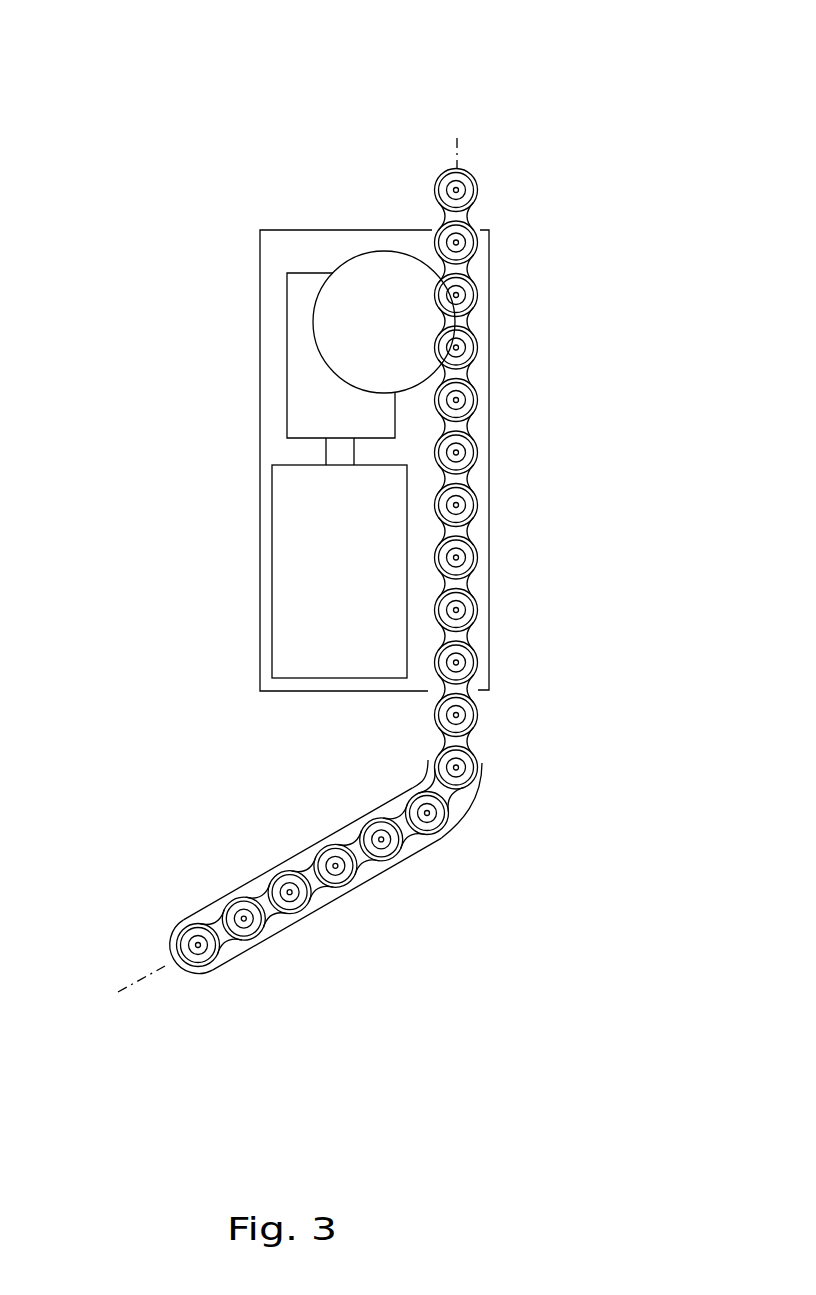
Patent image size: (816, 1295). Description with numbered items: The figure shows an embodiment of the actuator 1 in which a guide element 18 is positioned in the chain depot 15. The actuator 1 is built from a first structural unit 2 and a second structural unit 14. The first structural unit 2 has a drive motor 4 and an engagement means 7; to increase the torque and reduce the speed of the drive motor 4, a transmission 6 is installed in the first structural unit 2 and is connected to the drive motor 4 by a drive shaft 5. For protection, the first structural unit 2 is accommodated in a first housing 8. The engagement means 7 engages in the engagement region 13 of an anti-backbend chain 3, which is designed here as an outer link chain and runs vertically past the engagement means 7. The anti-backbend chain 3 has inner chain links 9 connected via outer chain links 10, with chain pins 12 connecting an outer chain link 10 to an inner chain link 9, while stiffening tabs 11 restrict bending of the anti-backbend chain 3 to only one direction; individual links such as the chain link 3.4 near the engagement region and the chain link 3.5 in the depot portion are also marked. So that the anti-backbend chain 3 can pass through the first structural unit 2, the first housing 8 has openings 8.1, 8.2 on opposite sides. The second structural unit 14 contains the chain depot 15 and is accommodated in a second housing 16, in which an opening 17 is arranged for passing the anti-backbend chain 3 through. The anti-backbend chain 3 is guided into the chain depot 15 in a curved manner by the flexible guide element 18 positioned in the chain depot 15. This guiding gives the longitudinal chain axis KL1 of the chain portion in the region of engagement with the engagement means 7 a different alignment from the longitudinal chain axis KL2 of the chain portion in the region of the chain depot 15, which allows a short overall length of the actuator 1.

The actuator 1 is at (320, 525).
The first structural unit 2 is at (243, 283).
The anti-backbend chain 3 is at (389, 553).
The chain link 3.4 is at (477, 300).
The chain link 3.5 is at (307, 912).
The drive motor 4 is at (339, 571).
The drive shaft 5 is at (342, 452).
The transmission 6 is at (341, 355).
The engagement means 7 is at (384, 322).
The first housing 8 is at (305, 460).
The opening 8.1 is at (481, 229).
The opening 8.2 is at (473, 692).
The inner chain link 9 is at (468, 375).
The outer chain link 10 is at (468, 428).
The stiffening tab 11 is at (477, 458).
The chain pin 12 is at (480, 513).
The engagement region 13 is at (468, 323).
The second structural unit 14 is at (358, 884).
The chain depot 15 is at (230, 950).
The second housing 16 is at (257, 883).
The opening 17 is at (430, 760).
The guide element 18 is at (470, 815).
The longitudinal chain axis KL1 is at (467, 129).
The longitudinal chain axis KL2 is at (102, 993).